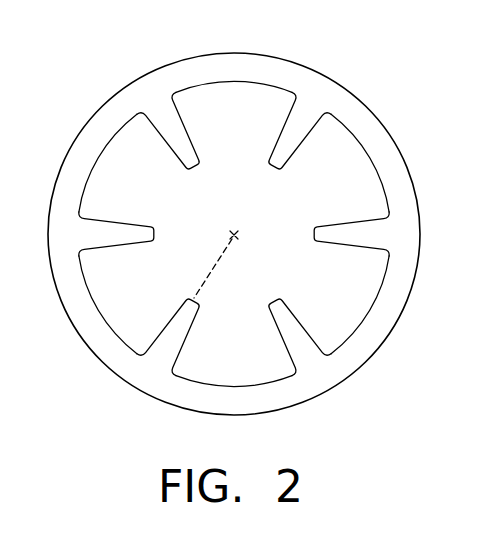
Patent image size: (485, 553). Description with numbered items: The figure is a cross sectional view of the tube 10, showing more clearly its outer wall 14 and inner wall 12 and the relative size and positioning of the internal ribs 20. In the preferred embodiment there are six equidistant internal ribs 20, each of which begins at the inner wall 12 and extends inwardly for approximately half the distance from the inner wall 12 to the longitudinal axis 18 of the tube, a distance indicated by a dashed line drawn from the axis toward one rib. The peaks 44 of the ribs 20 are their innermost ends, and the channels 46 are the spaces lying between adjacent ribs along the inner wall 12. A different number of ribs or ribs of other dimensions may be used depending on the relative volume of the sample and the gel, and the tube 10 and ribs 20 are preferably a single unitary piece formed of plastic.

The tube 10 is at (234, 209).
The inner wall 12 is at (370, 168).
The outer wall 14 is at (110, 99).
The longitudinal axis 18 is at (240, 234).
The internal ribs 20 is at (234, 233).
The peaks 44 is at (272, 172).
The channels 46 is at (139, 296).